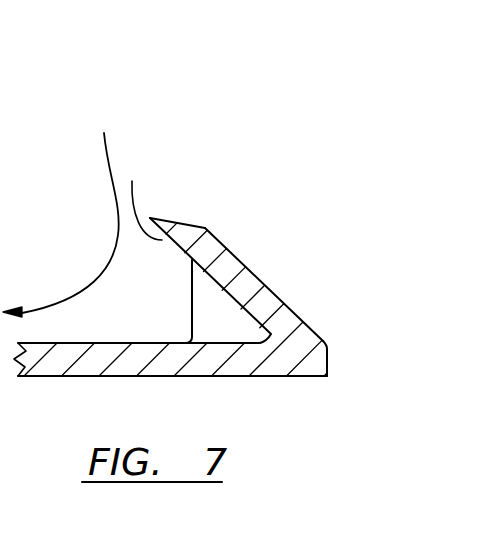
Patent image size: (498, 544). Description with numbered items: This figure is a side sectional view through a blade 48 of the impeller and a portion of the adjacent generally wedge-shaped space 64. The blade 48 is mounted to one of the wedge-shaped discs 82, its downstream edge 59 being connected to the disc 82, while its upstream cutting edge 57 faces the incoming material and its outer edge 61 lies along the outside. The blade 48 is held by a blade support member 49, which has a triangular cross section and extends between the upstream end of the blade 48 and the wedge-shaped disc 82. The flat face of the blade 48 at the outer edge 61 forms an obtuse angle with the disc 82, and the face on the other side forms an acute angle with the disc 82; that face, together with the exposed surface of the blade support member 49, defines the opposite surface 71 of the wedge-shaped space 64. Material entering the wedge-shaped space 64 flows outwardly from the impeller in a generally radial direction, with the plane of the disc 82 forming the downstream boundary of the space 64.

The wedge-shaped disc 82 is at (77, 376).
The blade 48 is at (213, 243).
The outer edge 61 is at (238, 258).
The upstream cutting edge 57 is at (166, 224).
The downstream edge 59 is at (320, 333).
The blade support member 49 is at (218, 307).
The generally wedge-shaped space 64 is at (163, 286).
The opposite surface 71 is at (140, 197).